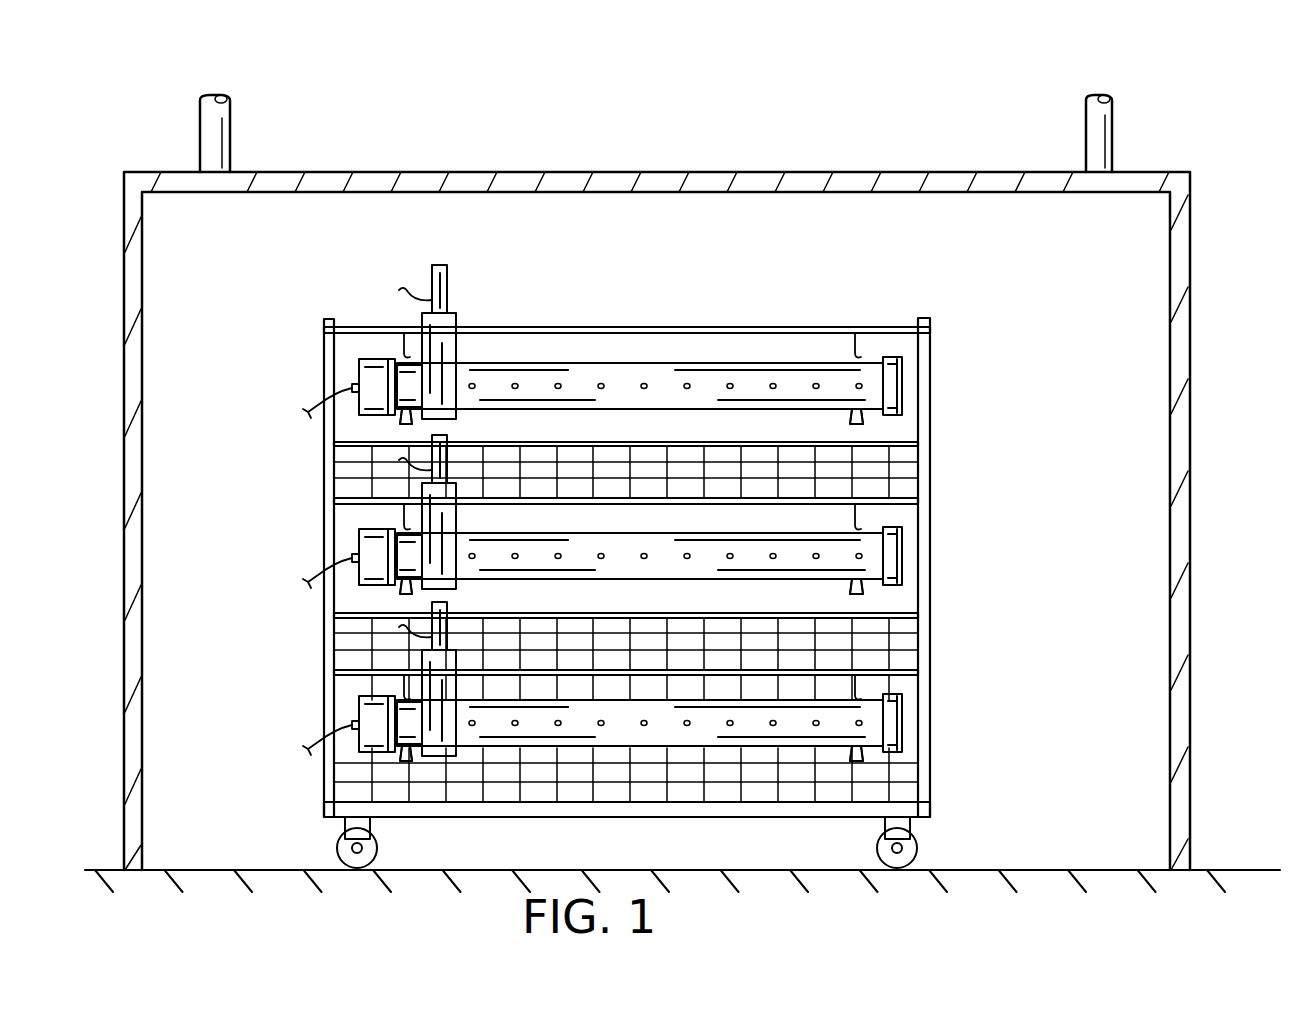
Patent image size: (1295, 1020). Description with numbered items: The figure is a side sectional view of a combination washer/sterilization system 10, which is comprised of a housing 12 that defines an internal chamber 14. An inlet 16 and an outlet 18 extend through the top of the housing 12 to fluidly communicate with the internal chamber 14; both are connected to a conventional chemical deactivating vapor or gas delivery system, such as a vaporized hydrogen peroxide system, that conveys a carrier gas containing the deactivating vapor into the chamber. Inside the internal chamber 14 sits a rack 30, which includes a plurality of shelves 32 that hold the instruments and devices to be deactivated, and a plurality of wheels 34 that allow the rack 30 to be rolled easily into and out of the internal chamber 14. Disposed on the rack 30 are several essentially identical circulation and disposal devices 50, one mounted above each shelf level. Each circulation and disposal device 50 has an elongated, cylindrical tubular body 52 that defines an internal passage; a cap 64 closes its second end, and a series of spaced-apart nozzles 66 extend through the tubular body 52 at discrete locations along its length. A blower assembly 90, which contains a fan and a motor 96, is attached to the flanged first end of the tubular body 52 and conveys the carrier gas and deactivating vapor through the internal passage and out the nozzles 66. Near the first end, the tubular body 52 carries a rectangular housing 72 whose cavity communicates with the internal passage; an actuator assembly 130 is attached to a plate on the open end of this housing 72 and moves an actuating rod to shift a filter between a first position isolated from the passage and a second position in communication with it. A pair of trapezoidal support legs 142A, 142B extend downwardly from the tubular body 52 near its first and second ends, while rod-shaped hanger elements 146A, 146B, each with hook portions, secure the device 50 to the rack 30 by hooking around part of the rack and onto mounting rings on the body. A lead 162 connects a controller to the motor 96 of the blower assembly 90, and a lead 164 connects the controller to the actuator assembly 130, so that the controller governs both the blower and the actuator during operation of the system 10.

The system 10 is at (1196, 78).
The housing 12 is at (1190, 268).
The internal chamber 14 is at (1125, 356).
The inlet 16 is at (1100, 148).
The outlet 18 is at (218, 142).
The rack 30 is at (940, 342).
The shelves 32 is at (888, 470).
The wheels 34 is at (338, 842).
The circulation and disposal device 50 is at (726, 528).
The tubular body 52 is at (583, 528).
The cap 64 is at (895, 393).
The nozzles 66 is at (818, 380).
The housing 72 is at (462, 347).
The blower assembly 90 is at (370, 352).
The motor 96 is at (355, 385).
The actuator assembly 130 is at (445, 283).
The support leg 142A is at (405, 597).
The support leg 142B is at (860, 592).
The hanger element 146A is at (405, 330).
The hanger element 146B is at (858, 348).
The lead 162 is at (310, 398).
The lead 164 is at (400, 285).